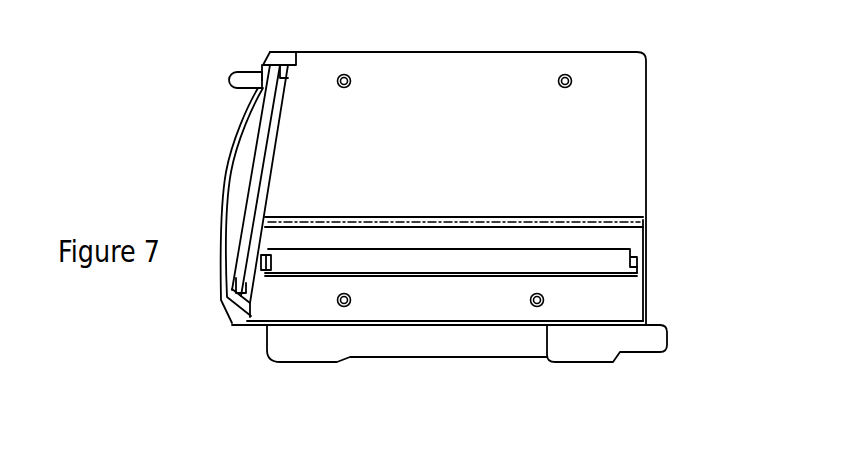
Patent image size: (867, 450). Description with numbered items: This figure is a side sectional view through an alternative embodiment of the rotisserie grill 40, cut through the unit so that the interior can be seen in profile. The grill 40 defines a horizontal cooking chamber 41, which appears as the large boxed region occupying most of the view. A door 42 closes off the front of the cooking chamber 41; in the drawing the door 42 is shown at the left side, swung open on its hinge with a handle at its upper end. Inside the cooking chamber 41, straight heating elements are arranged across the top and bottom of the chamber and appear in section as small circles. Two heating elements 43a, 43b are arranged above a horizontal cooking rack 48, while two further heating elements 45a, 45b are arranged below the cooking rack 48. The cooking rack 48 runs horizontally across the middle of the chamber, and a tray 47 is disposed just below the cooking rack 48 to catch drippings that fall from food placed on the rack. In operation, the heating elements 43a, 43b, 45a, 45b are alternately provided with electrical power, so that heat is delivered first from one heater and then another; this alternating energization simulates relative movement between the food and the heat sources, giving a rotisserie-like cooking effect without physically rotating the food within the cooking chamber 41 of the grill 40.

The rotisserie grill 40 is at (652, 90).
The horizontal cooking chamber 41 is at (530, 172).
The door 42 is at (227, 169).
The heating element 43a is at (345, 88).
The heating element 43b is at (562, 88).
The heating element 45a is at (345, 308).
The heating element 45b is at (538, 308).
The tray 47 is at (610, 262).
The horizontal cooking rack 48 is at (557, 215).